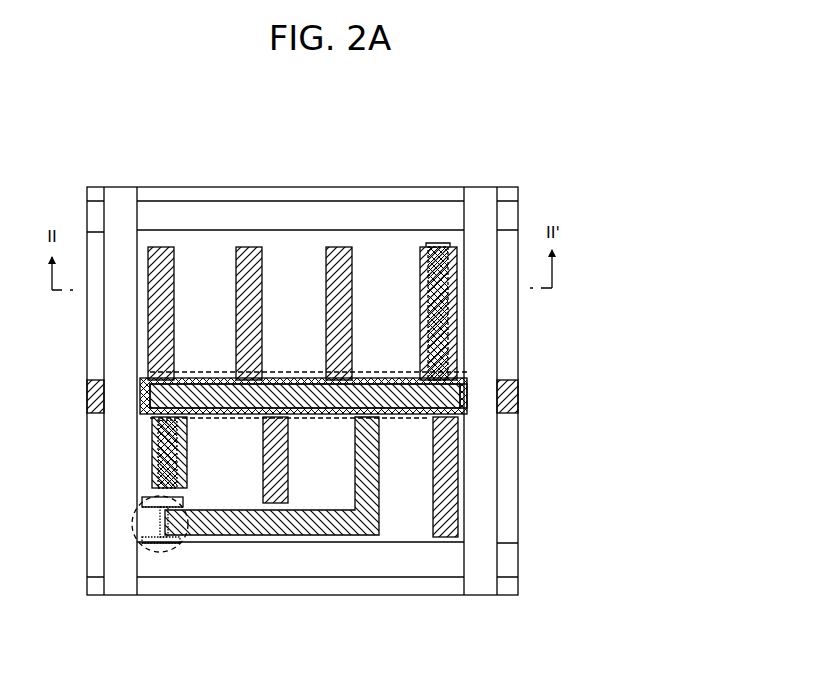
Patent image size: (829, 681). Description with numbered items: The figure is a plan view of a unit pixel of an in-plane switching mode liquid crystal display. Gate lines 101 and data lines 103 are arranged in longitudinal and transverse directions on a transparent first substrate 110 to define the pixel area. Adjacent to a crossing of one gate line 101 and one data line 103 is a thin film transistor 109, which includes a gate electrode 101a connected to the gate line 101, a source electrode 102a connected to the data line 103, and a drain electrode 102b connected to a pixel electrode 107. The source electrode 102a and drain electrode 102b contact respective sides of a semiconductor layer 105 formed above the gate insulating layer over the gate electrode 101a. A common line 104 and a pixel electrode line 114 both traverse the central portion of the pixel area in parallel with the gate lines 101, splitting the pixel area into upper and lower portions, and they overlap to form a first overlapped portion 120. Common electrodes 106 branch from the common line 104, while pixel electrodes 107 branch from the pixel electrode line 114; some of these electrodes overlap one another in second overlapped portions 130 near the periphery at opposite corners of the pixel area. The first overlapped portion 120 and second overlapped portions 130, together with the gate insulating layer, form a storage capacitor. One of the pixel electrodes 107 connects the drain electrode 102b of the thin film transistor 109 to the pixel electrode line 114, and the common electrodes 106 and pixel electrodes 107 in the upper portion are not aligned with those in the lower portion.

The transparent first substrate 110 is at (531, 200).
The gate lines 101 is at (508, 201).
The gate electrode 101a is at (147, 497).
The source electrode 102a is at (155, 515).
The drain electrode 102b is at (183, 540).
The data lines 103 is at (115, 427).
The common line 104 is at (87, 393).
The semiconductor layer 105 is at (163, 543).
The common electrodes 106 is at (337, 247).
The pixel electrodes 107 is at (249, 247).
The thin film transistor 109 is at (133, 537).
The pixel electrode line 114 is at (465, 408).
The first overlapped portion 120 is at (470, 395).
The second overlapped portions 130 is at (438, 243).